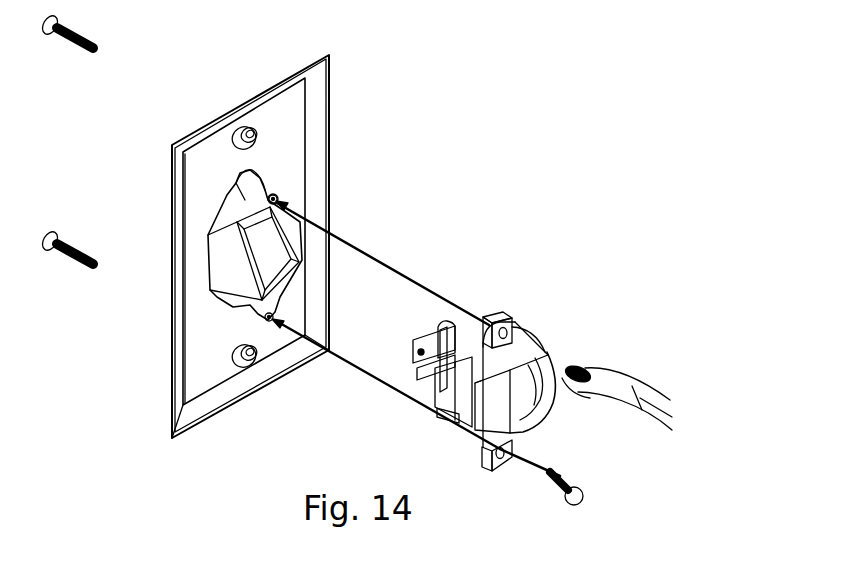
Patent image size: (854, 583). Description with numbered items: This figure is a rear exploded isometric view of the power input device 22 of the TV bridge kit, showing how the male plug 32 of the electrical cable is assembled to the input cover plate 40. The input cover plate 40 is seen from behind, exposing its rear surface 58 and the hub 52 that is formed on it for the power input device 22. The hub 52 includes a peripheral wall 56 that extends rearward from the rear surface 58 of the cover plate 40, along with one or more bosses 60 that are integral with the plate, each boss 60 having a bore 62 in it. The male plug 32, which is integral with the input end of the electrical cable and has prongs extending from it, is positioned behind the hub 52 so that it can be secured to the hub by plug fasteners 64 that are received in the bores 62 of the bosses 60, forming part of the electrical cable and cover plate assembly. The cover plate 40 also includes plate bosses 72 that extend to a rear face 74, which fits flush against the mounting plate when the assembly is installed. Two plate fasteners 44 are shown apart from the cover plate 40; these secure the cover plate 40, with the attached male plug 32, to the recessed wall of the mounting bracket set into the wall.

The power input device 22 is at (445, 175).
The male plug 32 is at (522, 345).
The input cover plate 40 is at (265, 388).
The plate fasteners 44 is at (68, 262).
The hub 52 is at (278, 203).
The peripheral wall 56 is at (215, 270).
The rear surface 58 is at (294, 153).
The boss 60 is at (238, 185).
The bore 62 is at (275, 193).
The plug fasteners 64 is at (564, 504).
The plate bosses 72 is at (246, 126).
The rear face 74 is at (238, 136).